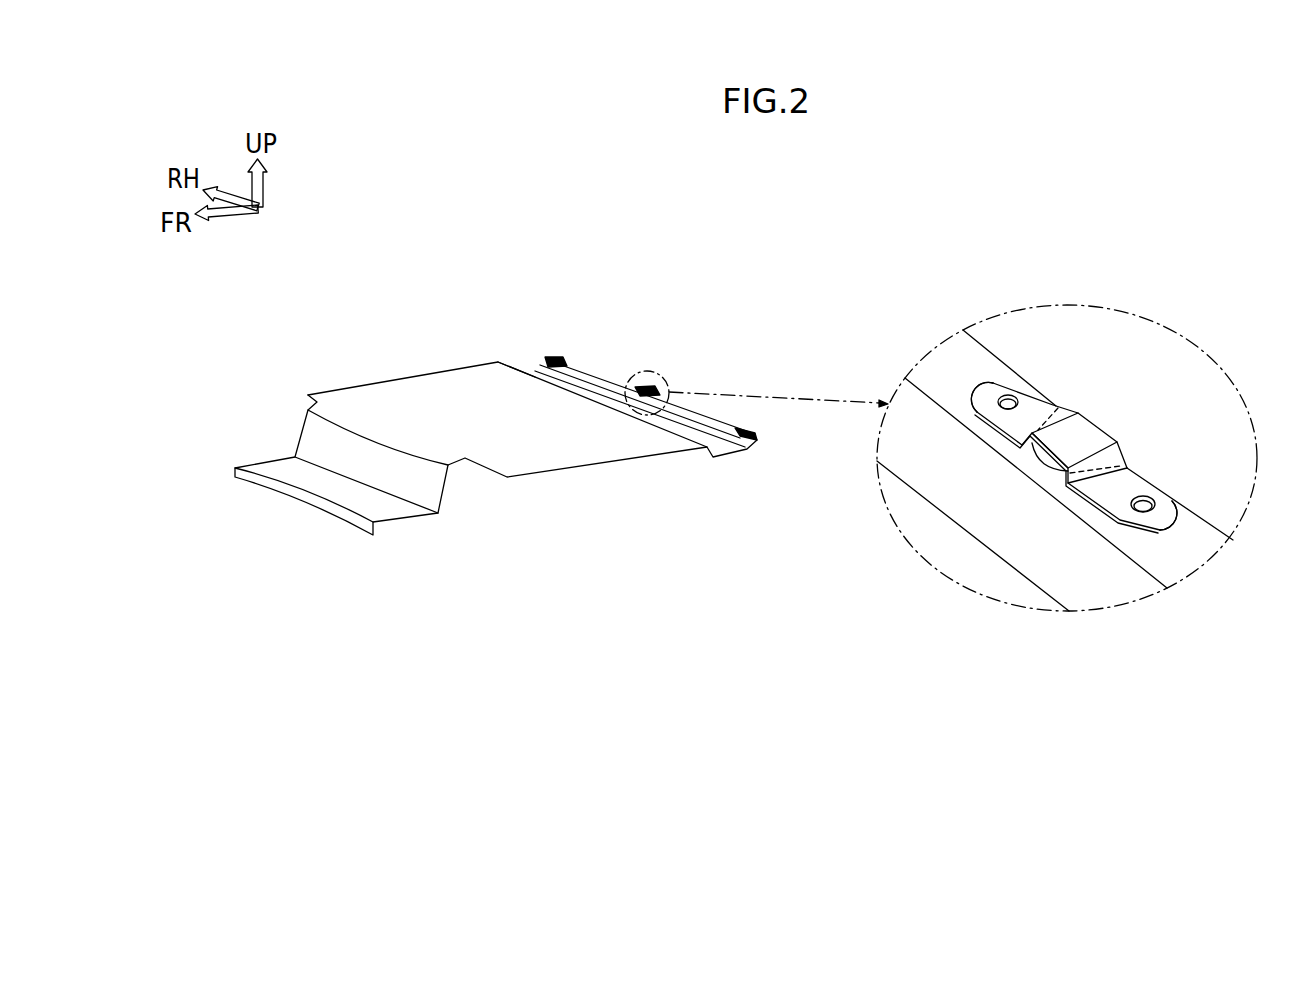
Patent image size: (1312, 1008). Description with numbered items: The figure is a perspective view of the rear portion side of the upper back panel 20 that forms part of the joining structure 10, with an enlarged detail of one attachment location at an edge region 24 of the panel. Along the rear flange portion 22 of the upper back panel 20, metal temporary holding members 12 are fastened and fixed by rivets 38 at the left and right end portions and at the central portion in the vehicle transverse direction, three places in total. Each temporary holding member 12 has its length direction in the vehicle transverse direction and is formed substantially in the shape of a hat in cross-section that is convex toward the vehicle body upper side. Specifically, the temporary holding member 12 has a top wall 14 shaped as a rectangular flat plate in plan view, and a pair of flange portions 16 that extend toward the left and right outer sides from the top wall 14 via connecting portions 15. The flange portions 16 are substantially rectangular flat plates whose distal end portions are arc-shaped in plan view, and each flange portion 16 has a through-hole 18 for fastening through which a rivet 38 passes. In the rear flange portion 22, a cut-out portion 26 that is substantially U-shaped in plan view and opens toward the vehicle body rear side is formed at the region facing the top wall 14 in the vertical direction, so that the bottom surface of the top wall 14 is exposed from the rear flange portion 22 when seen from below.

The vehicle roof structure 10 is at (1122, 338).
The temporary holding member 12 is at (564, 358).
The top wall 14 is at (1078, 432).
The connecting portion 15 is at (1127, 470).
The flange portion 16 is at (984, 406).
The through-hole 18 is at (1122, 522).
The upper back panel 20 is at (391, 374).
The rear flange portion 22 is at (588, 371).
The panel edge portion 24 is at (513, 367).
The cut-out portion 26 is at (1072, 418).
The rivet 38 is at (1008, 395).